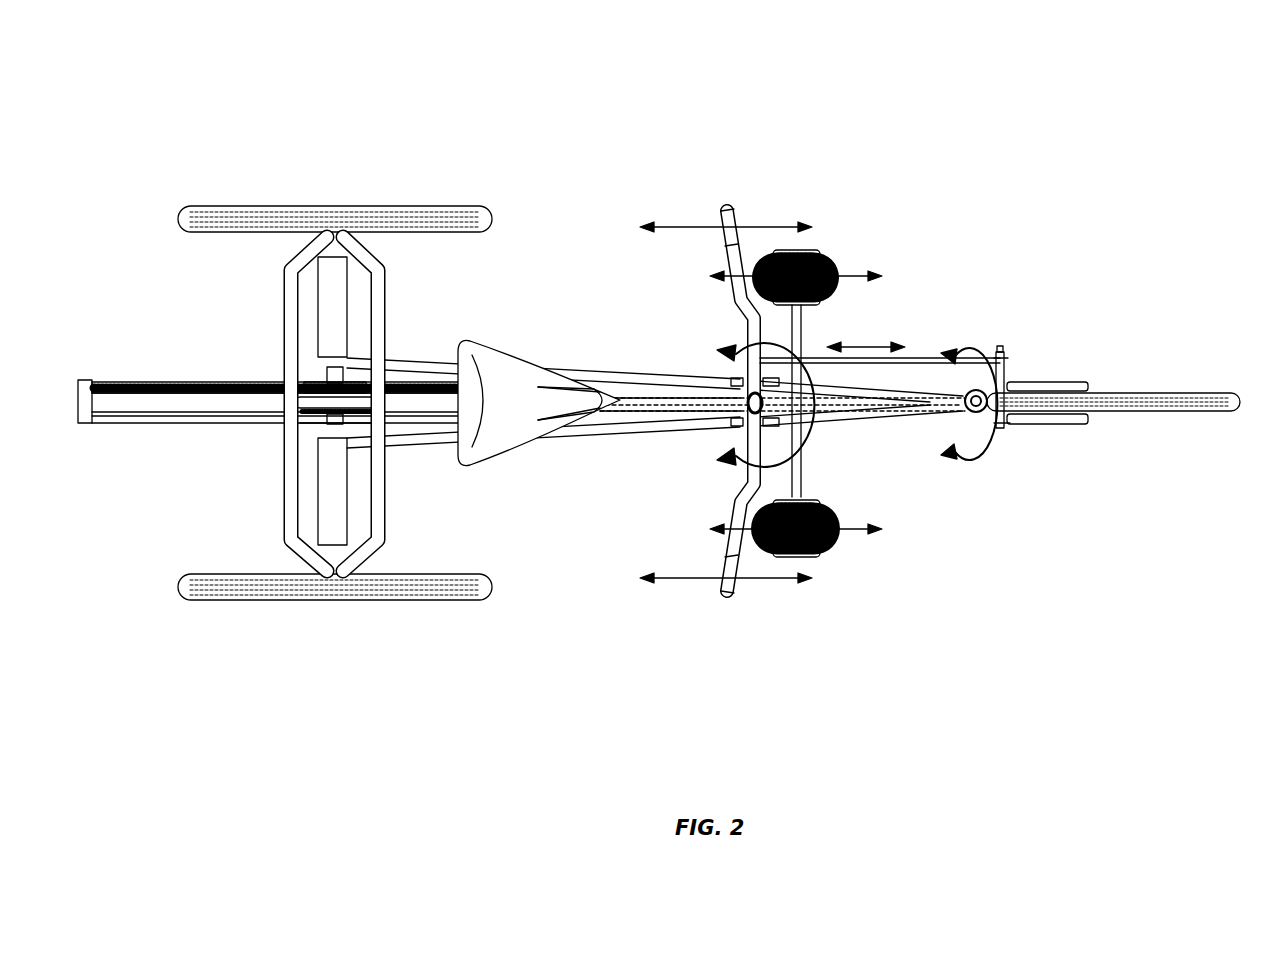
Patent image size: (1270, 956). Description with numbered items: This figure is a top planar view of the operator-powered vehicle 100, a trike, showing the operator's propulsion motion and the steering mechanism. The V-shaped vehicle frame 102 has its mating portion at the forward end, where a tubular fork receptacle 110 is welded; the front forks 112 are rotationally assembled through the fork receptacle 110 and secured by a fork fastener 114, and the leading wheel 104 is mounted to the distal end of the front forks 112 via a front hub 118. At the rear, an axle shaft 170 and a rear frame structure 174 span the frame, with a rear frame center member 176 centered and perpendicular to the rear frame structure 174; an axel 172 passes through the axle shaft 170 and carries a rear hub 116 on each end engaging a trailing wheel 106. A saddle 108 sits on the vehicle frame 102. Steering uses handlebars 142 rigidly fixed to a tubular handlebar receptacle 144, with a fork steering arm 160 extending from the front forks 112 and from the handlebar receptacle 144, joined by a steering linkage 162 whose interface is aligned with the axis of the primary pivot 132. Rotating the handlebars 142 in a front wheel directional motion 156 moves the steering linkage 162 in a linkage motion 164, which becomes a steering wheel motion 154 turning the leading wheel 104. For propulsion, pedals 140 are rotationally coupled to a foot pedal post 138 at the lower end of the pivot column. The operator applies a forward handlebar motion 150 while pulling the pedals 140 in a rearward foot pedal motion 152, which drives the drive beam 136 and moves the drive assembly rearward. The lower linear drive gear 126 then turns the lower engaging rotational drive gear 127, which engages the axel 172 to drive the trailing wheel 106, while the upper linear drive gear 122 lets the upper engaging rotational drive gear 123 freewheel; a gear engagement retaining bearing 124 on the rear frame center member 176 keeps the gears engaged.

The operator-powered vehicle 100 is at (1027, 150).
The vehicle frame 102 is at (598, 372).
The leading wheel 104 is at (1120, 404).
The trailing wheel 106 is at (286, 212).
The saddle 108 is at (490, 372).
The fork receptacle 110 is at (994, 407).
The front forks 112 is at (1045, 386).
The fork fastener 114 is at (1005, 415).
The rear hub 116 is at (334, 205).
The front hub 118 is at (1190, 348).
The upper linear drive gear 122 is at (178, 418).
The upper engaging rotational drive gear 123 is at (318, 427).
The gear engagement retaining bearing 124 is at (322, 428).
The lower linear drive gear 126 is at (172, 385).
The lower engaging rotational drive gear 127 is at (327, 387).
The primary pivot 132 is at (724, 378).
The drive beam 136 is at (637, 404).
The foot pedal post 138 is at (805, 497).
The pedals 140 is at (808, 262).
The handlebars 142 is at (727, 238).
The handlebar receptacle 144 is at (730, 420).
The forward handlebar motion 150 is at (683, 227).
The rearward foot pedal motion 152 is at (850, 273).
The steering wheel motion 154 is at (984, 347).
The front wheel directional motion 156 is at (730, 348).
The fork steering arm 160 is at (1010, 372).
The steering linkage 162 is at (921, 356).
The linkage motion 164 is at (866, 345).
The axle shaft 170 is at (332, 297).
The axel 172 is at (327, 372).
The rear frame structure 174 is at (290, 290).
The rear frame center member 176 is at (355, 402).